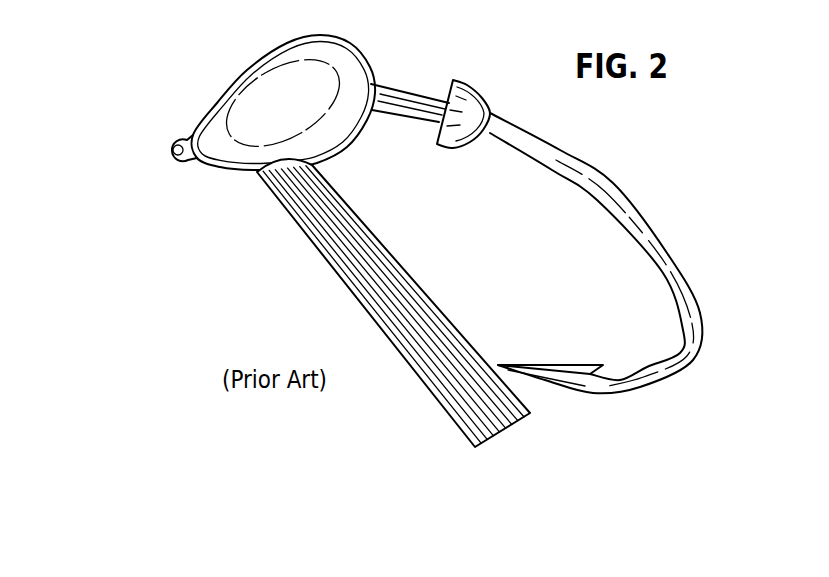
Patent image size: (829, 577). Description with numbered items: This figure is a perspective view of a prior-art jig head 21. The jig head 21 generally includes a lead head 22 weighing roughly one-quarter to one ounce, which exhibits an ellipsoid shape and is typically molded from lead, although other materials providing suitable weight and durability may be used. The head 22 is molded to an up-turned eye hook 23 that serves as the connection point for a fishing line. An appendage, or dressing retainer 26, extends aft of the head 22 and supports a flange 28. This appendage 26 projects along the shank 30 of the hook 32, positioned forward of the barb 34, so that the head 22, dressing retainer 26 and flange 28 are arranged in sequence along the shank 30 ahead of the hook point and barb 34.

The jig head 21 is at (130, 104).
The lead head 22 is at (285, 43).
The up-turned eye hook 23 is at (176, 162).
The dressing retainer 26 is at (393, 90).
The flange 28 is at (453, 150).
The shank 30 is at (613, 183).
The hook 32 is at (670, 382).
The barb 34 is at (590, 365).